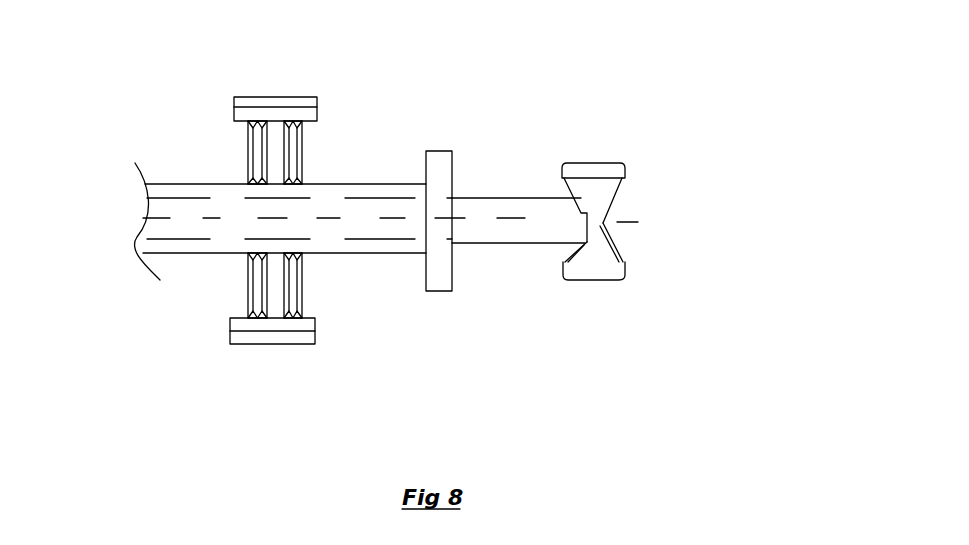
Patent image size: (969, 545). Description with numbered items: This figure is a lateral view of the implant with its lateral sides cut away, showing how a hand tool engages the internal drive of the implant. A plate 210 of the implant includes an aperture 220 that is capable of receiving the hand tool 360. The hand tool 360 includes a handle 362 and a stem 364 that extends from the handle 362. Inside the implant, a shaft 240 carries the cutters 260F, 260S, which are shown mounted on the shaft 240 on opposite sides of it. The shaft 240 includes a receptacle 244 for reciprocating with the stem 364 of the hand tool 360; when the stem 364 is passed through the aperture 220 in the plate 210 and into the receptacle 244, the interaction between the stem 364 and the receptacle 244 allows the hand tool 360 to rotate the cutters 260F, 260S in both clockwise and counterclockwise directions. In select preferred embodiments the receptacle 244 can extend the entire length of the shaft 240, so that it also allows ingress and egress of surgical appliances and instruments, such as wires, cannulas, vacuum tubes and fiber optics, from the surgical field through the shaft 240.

The plate 210 is at (372, 237).
The aperture 220 is at (440, 183).
The shaft 240 is at (363, 177).
The receptacle 244 is at (205, 238).
The cutter 260F is at (266, 96).
The cutter 260S is at (280, 345).
The hand tool 360 is at (665, 263).
The handle 362 is at (597, 267).
The stem 364 is at (498, 244).